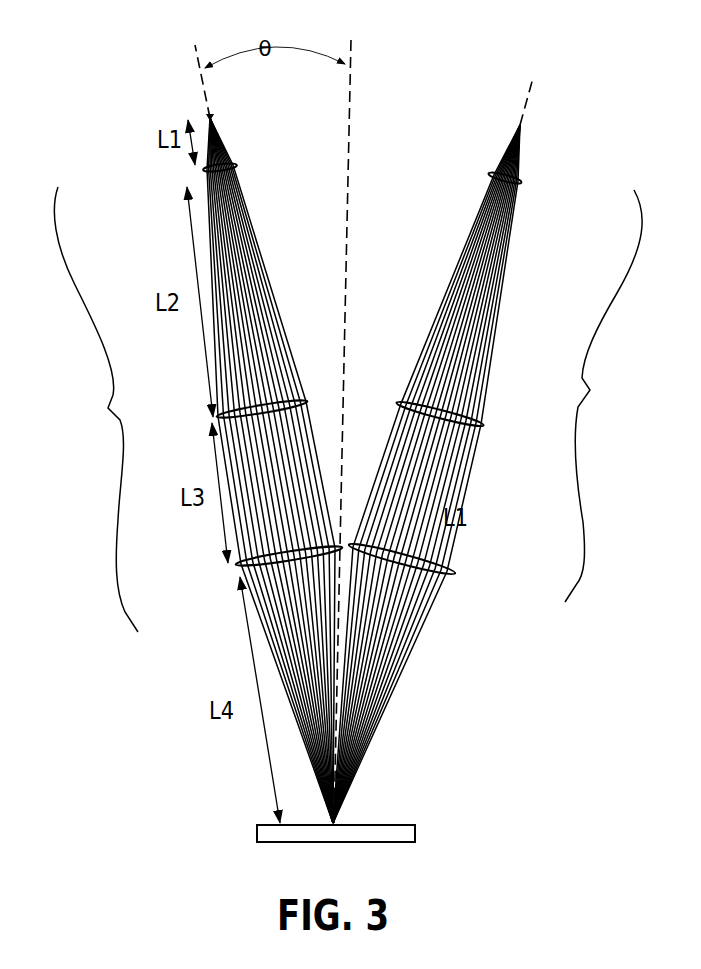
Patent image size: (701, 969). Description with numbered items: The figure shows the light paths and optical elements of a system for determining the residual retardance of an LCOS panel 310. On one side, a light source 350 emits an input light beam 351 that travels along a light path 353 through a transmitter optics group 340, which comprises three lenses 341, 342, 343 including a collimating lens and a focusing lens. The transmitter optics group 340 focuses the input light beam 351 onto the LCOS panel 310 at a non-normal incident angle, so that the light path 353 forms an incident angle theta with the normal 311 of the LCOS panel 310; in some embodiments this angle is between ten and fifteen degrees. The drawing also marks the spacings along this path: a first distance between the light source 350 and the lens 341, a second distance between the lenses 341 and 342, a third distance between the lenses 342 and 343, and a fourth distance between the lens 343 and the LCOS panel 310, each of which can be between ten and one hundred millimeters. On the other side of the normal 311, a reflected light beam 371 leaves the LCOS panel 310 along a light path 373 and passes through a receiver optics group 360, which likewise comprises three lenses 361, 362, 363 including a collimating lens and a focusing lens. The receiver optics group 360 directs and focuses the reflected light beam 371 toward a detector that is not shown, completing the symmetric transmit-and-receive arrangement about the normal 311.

The LCOS panel 310 is at (372, 834).
The normal 311 is at (367, 431).
The transmitter optics group 340 is at (87, 409).
The lens 341 is at (183, 177).
The lens 342 is at (232, 412).
The lens 343 is at (260, 560).
The light source 350 is at (213, 116).
The input light beam 351 is at (223, 140).
The light path 353 is at (202, 88).
The receiver optics group 360 is at (610, 396).
The lens 361 is at (538, 181).
The lens 362 is at (469, 420).
The lens 363 is at (430, 567).
The reflected light beam 371 is at (512, 135).
The light path 373 is at (525, 107).